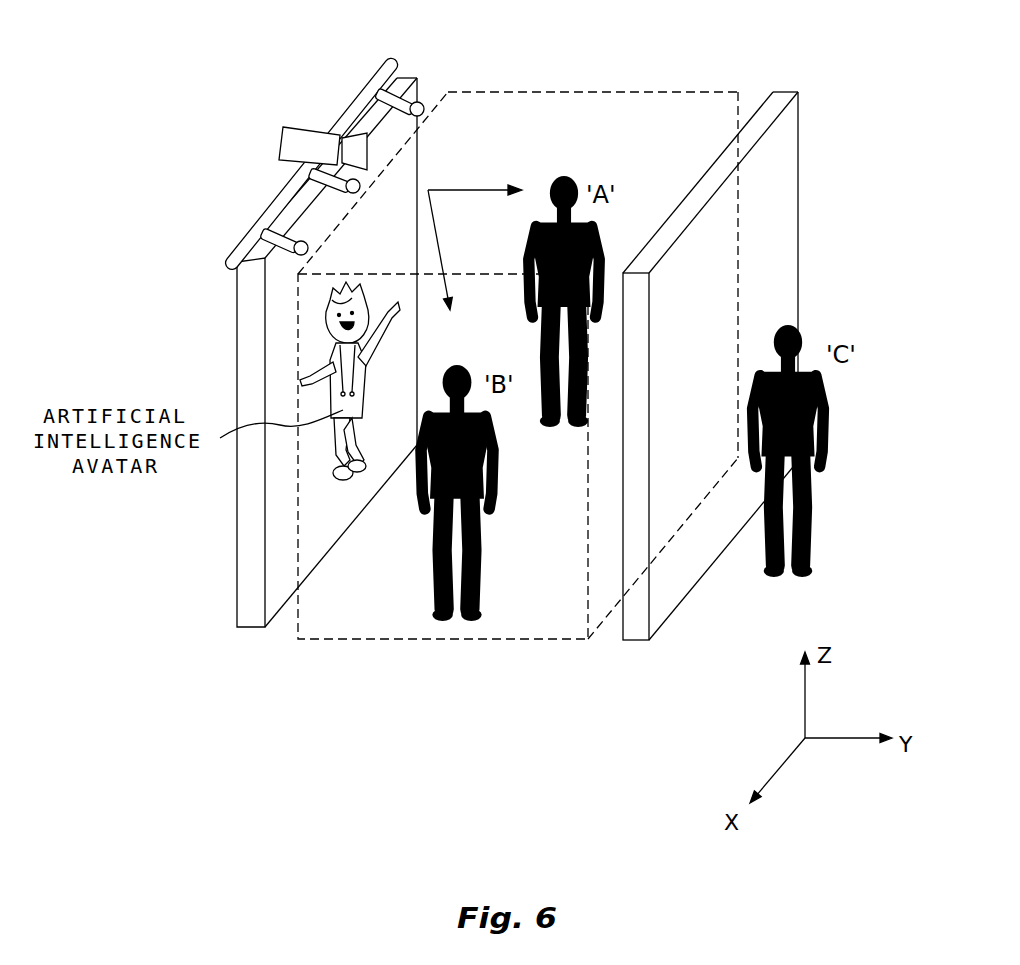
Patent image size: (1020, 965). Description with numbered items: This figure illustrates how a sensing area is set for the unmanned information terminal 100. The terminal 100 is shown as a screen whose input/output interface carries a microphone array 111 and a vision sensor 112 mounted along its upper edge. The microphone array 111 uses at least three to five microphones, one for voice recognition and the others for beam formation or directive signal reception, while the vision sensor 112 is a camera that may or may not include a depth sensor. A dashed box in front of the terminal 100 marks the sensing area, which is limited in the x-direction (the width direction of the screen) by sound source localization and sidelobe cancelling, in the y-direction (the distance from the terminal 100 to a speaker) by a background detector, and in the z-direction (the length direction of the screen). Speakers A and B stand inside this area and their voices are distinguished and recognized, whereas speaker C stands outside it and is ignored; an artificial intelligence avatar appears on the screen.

The unmanned information terminal 100 is at (258, 650).
The microphone array 111 is at (420, 103).
The vision sensor 112 is at (312, 142).